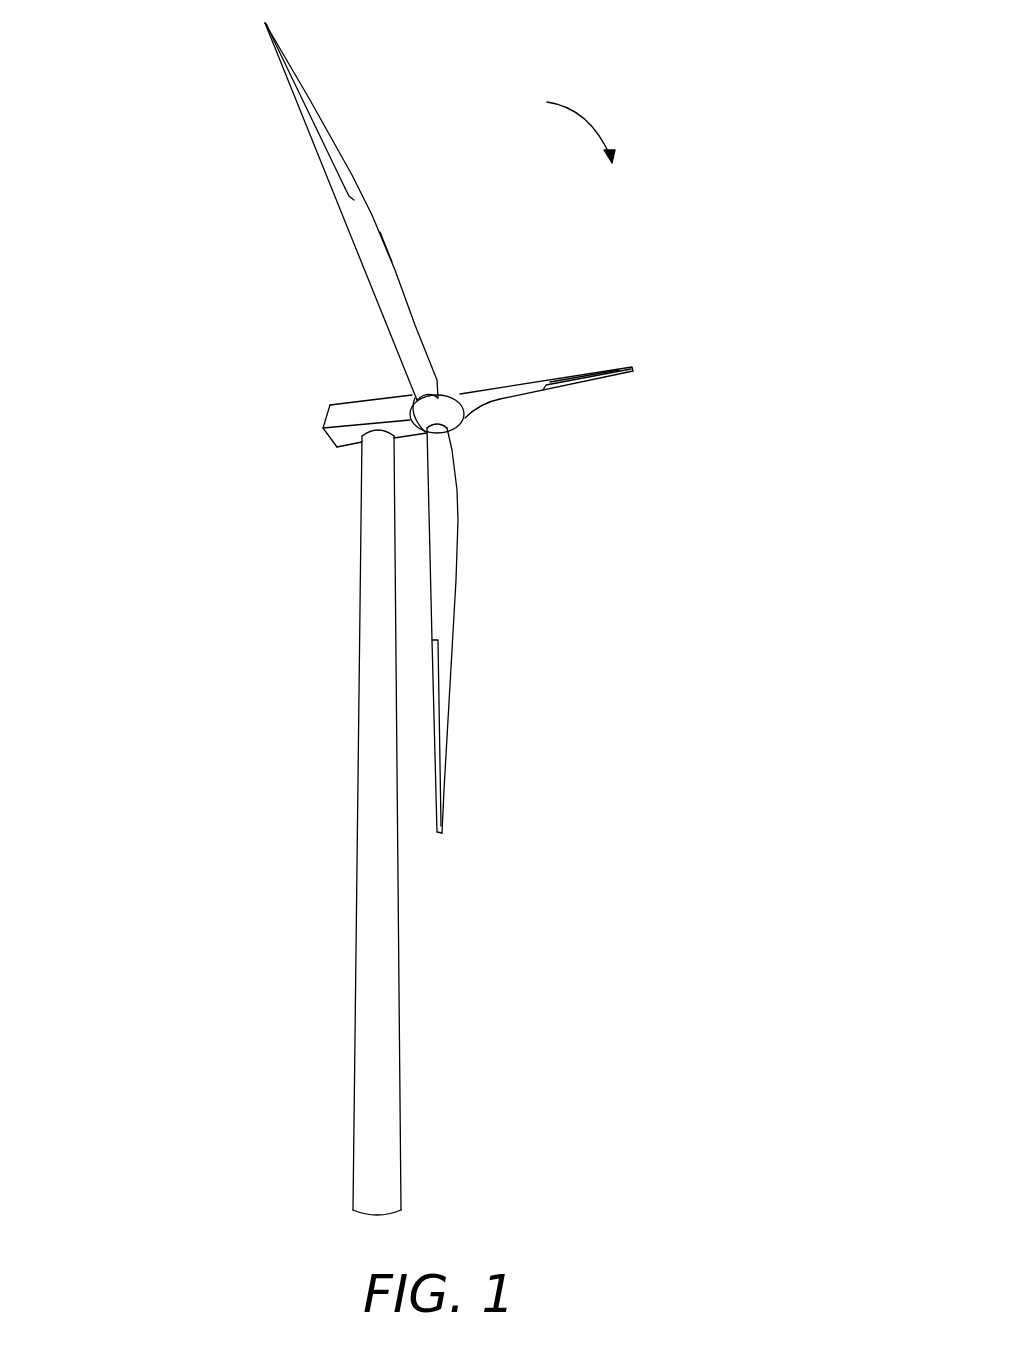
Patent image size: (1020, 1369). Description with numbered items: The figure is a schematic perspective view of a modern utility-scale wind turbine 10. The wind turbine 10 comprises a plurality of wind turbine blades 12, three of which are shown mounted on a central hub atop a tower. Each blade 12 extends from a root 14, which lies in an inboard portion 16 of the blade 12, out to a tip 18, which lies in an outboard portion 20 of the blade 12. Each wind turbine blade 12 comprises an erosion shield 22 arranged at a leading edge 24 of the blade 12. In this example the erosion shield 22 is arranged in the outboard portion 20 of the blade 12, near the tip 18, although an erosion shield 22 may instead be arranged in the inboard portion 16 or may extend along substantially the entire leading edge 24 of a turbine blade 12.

The wind turbine 10 is at (203, 310).
The wind turbine blade 12 is at (405, 428).
The root 14 is at (433, 402).
The inboard portion 16 is at (405, 428).
The tip 18 is at (263, 24).
The outboard portion 20 is at (361, 111).
The erosion shield 22 is at (349, 185).
The leading edge 24 is at (386, 250).